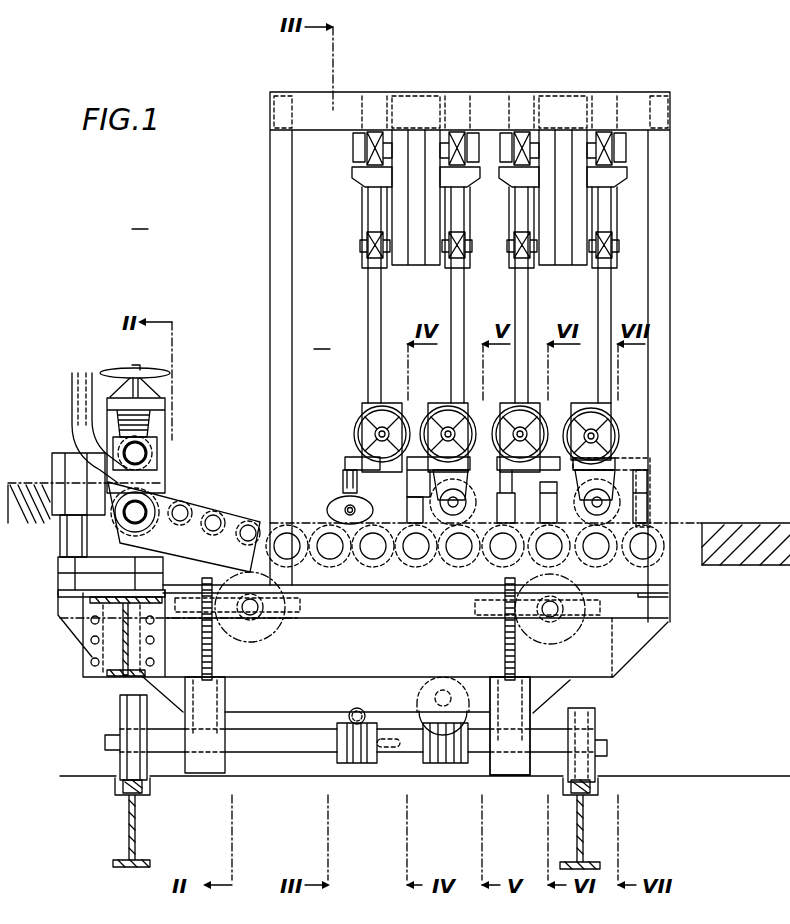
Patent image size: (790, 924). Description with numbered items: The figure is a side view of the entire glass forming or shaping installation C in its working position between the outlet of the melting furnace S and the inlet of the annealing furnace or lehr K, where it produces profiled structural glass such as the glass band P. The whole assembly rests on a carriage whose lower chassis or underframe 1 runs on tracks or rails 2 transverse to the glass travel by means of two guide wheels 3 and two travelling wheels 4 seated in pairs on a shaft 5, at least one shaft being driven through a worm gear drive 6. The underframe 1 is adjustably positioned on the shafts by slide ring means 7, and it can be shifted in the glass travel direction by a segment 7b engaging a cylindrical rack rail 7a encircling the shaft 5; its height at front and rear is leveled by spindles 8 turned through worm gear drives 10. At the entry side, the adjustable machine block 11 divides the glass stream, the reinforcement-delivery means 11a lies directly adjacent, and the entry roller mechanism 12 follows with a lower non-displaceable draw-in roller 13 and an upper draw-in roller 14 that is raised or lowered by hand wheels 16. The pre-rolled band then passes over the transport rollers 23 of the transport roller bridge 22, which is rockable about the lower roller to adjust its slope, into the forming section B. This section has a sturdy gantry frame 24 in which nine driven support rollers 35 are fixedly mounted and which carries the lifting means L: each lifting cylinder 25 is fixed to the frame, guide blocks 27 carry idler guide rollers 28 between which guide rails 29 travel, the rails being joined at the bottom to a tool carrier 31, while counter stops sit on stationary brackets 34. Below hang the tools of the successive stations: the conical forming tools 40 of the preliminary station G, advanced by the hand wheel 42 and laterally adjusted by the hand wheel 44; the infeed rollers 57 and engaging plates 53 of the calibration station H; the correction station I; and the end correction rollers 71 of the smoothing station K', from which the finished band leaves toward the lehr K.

The lower chassis or underframe 1 is at (660, 608).
The tracks or rails 2 is at (130, 815).
The guide wheels 3 is at (120, 713).
The travelling wheels 4 is at (588, 718).
The shaft 5 is at (265, 748).
The worm gear drive 6 is at (353, 763).
The slide ring means 7 is at (535, 752).
The cylindrical rack rail 7a is at (436, 763).
The segment 7b is at (477, 763).
The spindles 8 is at (212, 645).
The worm gear drive 10 is at (263, 633).
The machine stone or block 11 is at (58, 455).
The reinforcement-delivery means 11a is at (82, 400).
The draw-in or entry roller mechanism 12 is at (157, 420).
The lower draw-in roller 13 is at (157, 445).
The upper draw-in roller 14 is at (113, 532).
The hand wheels 16 is at (163, 372).
The transport roller bridge 22 is at (182, 540).
The transport rollers 23 is at (248, 530).
The gantry frame 24 is at (488, 97).
The lifting cylinder 25 is at (360, 212).
The guide blocks 27 is at (415, 253).
The idler guide rollers 28 is at (461, 132).
The guide rails 29 is at (370, 290).
The tool carrier or support 31 is at (523, 475).
The stationary brackets 34 is at (617, 174).
The support rollers 35 is at (487, 570).
The shaping or forming tools 40 is at (337, 503).
The hand wheel 42 is at (363, 410).
The hand wheel 44 is at (357, 430).
The adjusting or engaging plates 53 is at (467, 492).
The infeed rollers 57 is at (408, 503).
The end or edge correction rollers 71 is at (641, 512).
The shaping or forming section B is at (322, 338).
The forming or shaping installation C is at (140, 218).
The preliminary shaping or forming station G is at (337, 460).
The calibration or edge-forming station H is at (417, 447).
The correction station I is at (487, 447).
The annealing furnace or lehr K is at (745, 522).
The smoothing station K' is at (636, 474).
The lifting means L is at (353, 183).
The glass band P is at (693, 522).
The melting furnace S is at (43, 483).